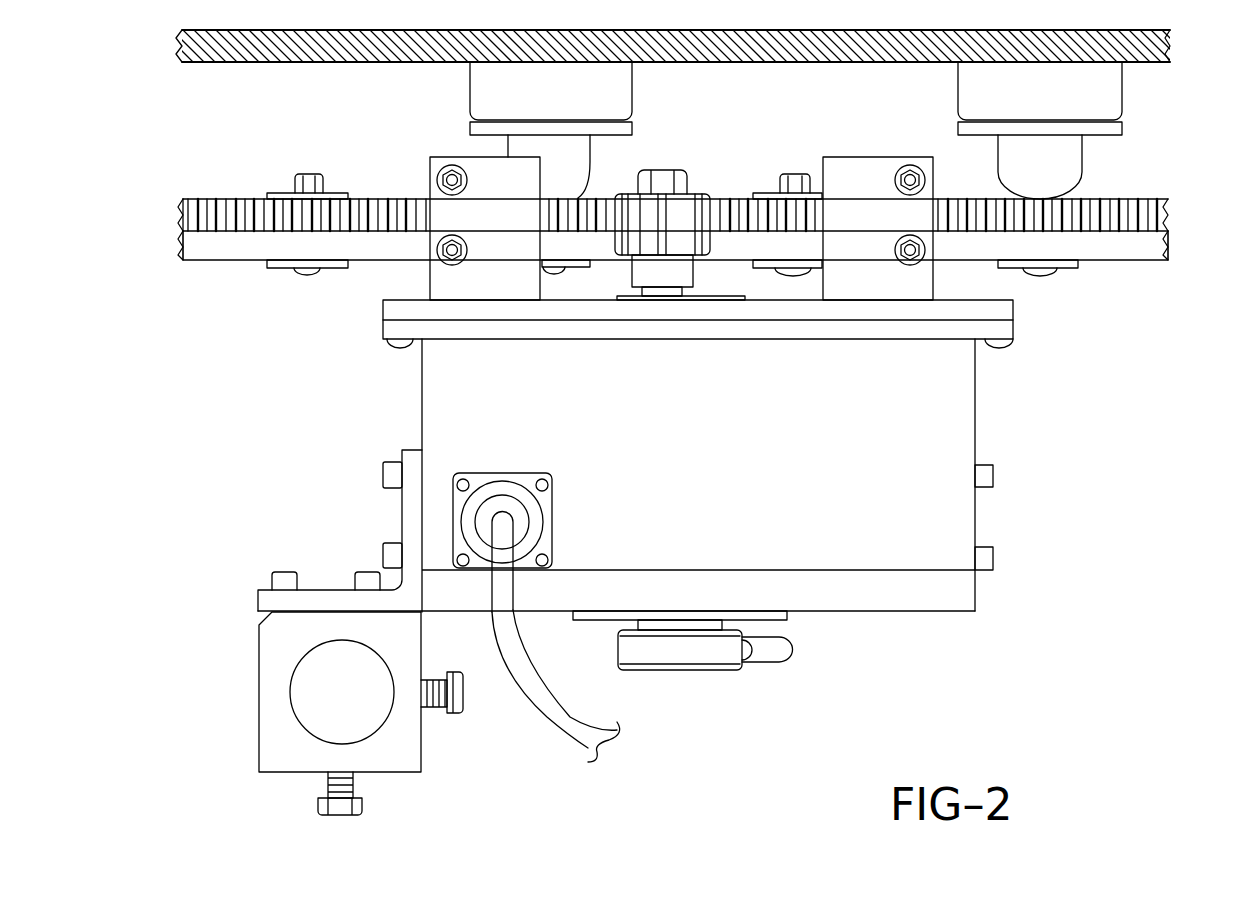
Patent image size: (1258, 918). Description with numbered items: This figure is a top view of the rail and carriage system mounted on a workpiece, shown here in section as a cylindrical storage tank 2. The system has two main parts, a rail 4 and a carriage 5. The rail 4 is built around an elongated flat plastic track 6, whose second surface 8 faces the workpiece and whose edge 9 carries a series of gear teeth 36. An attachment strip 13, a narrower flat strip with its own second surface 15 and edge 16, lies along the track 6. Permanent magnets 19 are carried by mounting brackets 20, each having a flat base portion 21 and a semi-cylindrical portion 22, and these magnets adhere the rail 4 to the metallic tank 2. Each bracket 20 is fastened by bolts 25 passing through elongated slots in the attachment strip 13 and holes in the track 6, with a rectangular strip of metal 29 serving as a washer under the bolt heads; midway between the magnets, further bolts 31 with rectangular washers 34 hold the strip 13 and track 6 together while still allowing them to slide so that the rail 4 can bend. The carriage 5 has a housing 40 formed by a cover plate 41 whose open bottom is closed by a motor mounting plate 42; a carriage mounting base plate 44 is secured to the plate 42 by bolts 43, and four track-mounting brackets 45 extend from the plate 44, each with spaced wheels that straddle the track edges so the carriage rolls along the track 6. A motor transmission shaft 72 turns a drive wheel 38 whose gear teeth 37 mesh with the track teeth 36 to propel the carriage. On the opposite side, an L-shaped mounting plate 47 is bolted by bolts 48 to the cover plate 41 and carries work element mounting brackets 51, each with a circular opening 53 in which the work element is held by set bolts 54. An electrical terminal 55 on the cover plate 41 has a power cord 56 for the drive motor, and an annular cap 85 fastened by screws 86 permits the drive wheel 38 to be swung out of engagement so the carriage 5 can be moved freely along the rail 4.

The storage tank 2 is at (228, 48).
The rail 4 is at (674, 232).
The carriage 5 is at (654, 506).
The track 6 is at (213, 198).
The second surface 8 is at (970, 199).
The edge 9 is at (1142, 217).
The attachment strip 13 is at (639, 256).
The second surface 15 is at (378, 265).
The edge 16 is at (205, 247).
The permanent magnet 19 is at (633, 84).
The mounting bracket 20 is at (1122, 137).
The flat base portion 21 is at (470, 128).
The semi-cylindrical portion 22 is at (1065, 158).
The bolt 25 is at (1040, 276).
The strip of metal 29 is at (578, 268).
The bolt 31 is at (308, 173).
The washer 34 is at (286, 194).
The gear teeth 36 is at (205, 218).
The gear teeth 37 is at (697, 220).
The drive wheel 38 is at (697, 193).
The housing 40 is at (420, 418).
The cover plate 41 is at (893, 592).
The motor mounting plate 42 is at (878, 333).
The bolt 43 is at (397, 350).
The carriage mounting base plate 44 is at (935, 313).
The track-mounting bracket 45 is at (510, 227).
The L-shaped mounting plate 47 is at (325, 593).
The bolt 48 is at (390, 477).
The work element mounting bracket 51 is at (272, 733).
The circular opening 53 is at (290, 705).
The set bolt 54 is at (462, 700).
The electrical terminal 55 is at (500, 503).
The power cord 56 is at (553, 727).
The motor transmission shaft 72 is at (655, 290).
The annular cap 85 is at (687, 652).
The screw 86 is at (768, 661).